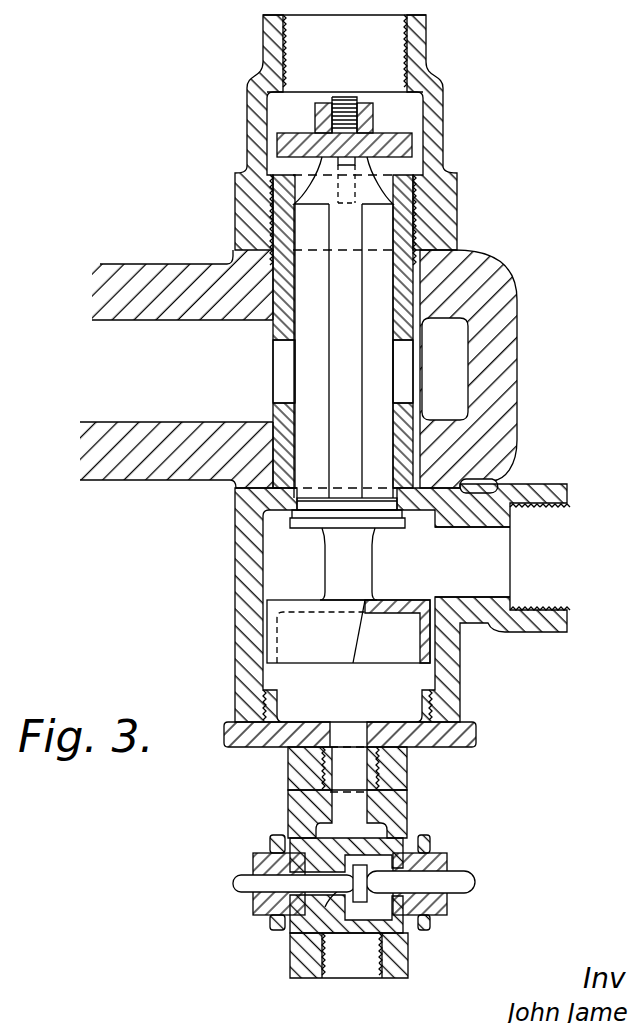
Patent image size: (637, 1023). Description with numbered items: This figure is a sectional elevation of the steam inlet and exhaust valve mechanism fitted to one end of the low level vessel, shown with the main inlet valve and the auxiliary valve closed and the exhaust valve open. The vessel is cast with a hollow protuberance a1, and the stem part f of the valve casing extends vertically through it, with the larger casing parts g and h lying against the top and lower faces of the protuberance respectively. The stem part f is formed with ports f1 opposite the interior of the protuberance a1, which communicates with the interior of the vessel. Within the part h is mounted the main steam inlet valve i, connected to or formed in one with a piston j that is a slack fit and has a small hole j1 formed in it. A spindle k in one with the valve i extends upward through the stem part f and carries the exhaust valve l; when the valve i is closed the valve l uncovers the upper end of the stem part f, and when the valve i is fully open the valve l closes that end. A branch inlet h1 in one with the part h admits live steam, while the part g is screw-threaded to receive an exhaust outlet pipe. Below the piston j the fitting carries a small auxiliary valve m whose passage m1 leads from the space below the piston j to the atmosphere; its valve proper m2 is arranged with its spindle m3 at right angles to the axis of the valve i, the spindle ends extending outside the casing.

The hollow protuberance a1 is at (118, 420).
The valve casing g is at (242, 151).
The exhaust valve l is at (298, 126).
The stem part f is at (423, 232).
The ports f1 is at (277, 375).
The spindle k is at (336, 327).
The lower part of valve casing h is at (228, 624).
The branch inlet h1 is at (549, 566).
The main steam inlet valve i is at (370, 514).
The piston j is at (348, 631).
The small hole j1 is at (402, 595).
The passage m1 is at (352, 772).
The auxiliary valve m is at (300, 820).
The valve proper m2 is at (266, 944).
The spindle m3 is at (200, 892).